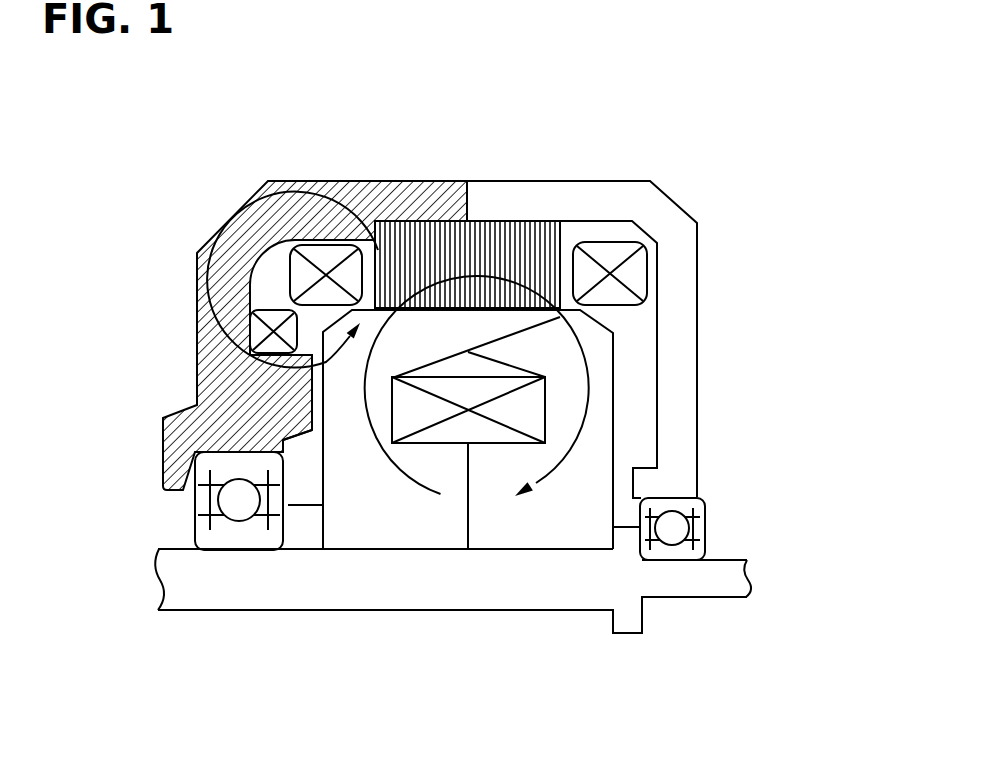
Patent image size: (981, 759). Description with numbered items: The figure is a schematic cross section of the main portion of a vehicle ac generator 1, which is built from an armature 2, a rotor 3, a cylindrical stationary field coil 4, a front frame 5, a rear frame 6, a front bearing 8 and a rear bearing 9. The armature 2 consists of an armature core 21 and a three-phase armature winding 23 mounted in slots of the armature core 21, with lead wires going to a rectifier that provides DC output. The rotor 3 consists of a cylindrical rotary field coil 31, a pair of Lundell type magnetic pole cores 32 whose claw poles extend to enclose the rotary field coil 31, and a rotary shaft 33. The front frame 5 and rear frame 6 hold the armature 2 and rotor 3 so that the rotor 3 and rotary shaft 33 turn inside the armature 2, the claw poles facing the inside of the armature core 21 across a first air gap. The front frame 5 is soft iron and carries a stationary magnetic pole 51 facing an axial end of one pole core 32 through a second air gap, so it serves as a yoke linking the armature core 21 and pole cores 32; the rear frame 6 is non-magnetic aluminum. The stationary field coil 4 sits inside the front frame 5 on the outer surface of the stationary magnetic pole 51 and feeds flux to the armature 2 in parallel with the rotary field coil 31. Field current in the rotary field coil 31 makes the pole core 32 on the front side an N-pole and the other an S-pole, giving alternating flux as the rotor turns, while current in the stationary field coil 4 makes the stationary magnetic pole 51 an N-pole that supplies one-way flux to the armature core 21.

The ac generator 1 is at (690, 109).
The armature 2 is at (522, 204).
The rotor 3 is at (634, 346).
The stationary field coil 4 is at (270, 317).
The front frame 5 is at (391, 193).
The rear frame 6 is at (670, 217).
The front bearing 8 is at (193, 537).
The rear bearing 9 is at (683, 507).
The armature core 21 is at (485, 232).
The armature winding 23 is at (327, 253).
The rotary field coil 31 is at (530, 420).
The magnetic pole core 32 is at (380, 535).
The rotary shaft 33 is at (213, 597).
The stationary magnetic pole 51 is at (295, 429).